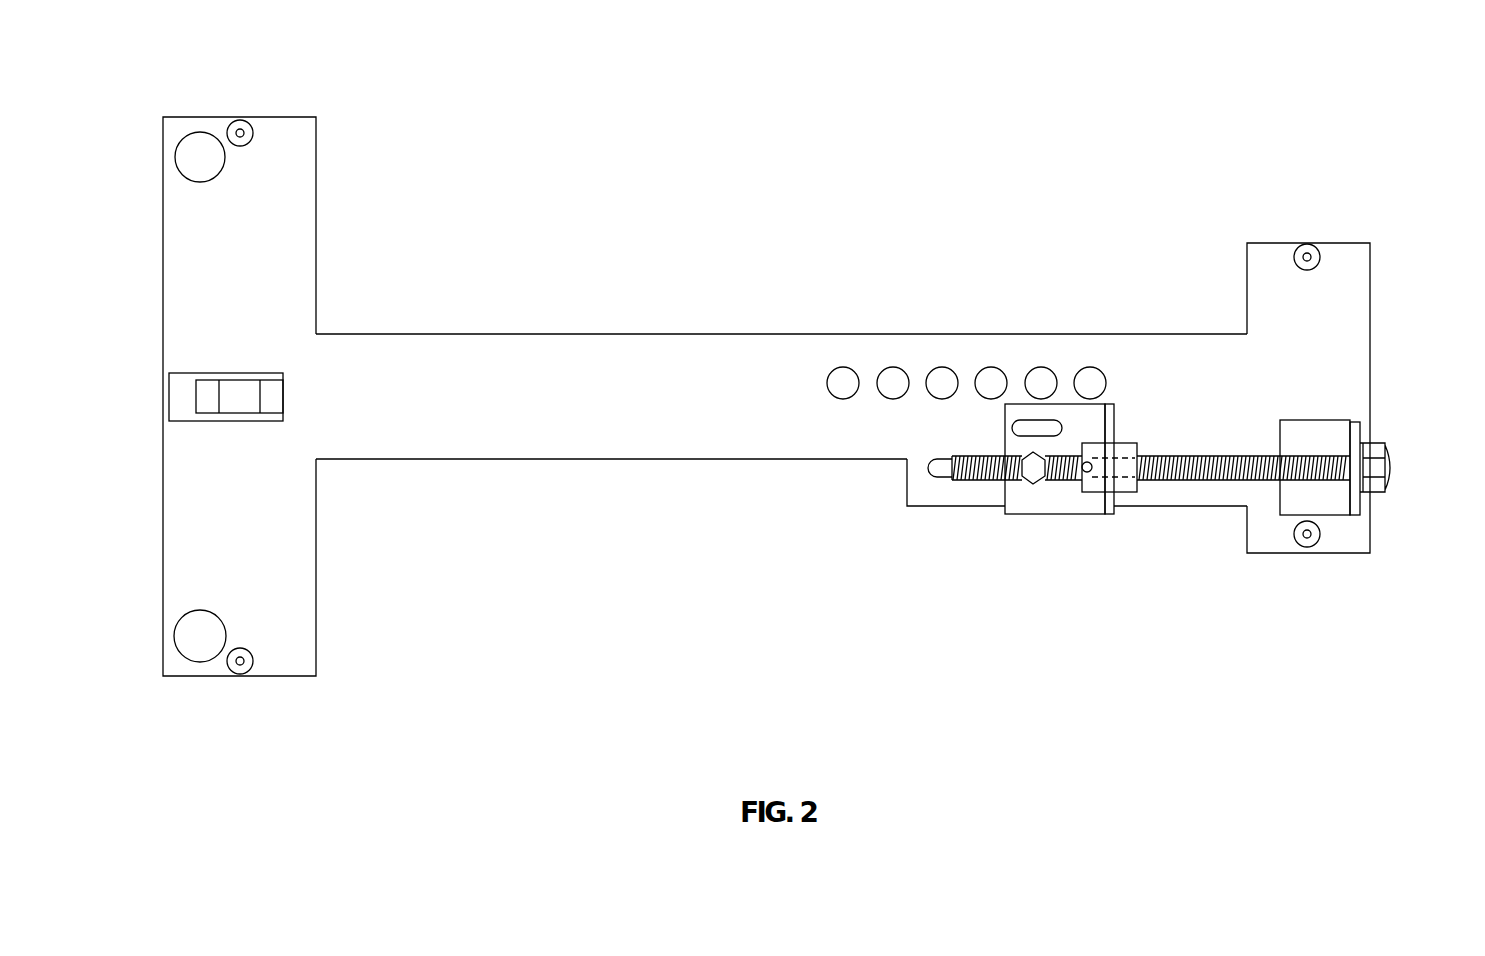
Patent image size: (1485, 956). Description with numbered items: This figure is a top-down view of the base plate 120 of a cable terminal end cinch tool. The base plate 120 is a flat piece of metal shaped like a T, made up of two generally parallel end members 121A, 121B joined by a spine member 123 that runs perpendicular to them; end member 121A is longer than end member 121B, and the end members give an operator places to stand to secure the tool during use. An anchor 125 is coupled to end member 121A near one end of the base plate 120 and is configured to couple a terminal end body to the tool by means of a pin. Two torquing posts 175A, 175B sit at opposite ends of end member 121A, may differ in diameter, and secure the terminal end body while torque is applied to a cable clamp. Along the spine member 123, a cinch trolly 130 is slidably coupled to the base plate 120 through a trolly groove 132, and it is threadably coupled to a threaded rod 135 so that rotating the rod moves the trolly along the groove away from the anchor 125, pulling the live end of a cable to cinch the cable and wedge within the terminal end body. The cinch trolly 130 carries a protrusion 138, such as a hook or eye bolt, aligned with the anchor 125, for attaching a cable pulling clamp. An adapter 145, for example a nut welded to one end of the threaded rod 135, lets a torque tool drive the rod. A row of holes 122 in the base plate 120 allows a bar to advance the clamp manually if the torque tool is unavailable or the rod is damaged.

The base plate 120 is at (582, 387).
The end member 121A is at (299, 545).
The end member 121B is at (1347, 323).
The holes 122 is at (990, 367).
The spine member 123 is at (720, 450).
The anchor 125 is at (194, 371).
The cinch trolly 130 is at (1055, 500).
The trolly groove 132 is at (938, 480).
The threaded rod 135 is at (1172, 478).
The protrusion 138 is at (1053, 415).
The adapter 145 is at (1393, 466).
The torquing post 175A is at (200, 662).
The torquing post 175B is at (202, 132).